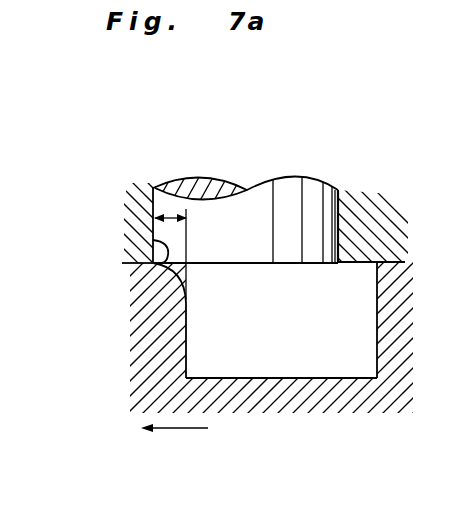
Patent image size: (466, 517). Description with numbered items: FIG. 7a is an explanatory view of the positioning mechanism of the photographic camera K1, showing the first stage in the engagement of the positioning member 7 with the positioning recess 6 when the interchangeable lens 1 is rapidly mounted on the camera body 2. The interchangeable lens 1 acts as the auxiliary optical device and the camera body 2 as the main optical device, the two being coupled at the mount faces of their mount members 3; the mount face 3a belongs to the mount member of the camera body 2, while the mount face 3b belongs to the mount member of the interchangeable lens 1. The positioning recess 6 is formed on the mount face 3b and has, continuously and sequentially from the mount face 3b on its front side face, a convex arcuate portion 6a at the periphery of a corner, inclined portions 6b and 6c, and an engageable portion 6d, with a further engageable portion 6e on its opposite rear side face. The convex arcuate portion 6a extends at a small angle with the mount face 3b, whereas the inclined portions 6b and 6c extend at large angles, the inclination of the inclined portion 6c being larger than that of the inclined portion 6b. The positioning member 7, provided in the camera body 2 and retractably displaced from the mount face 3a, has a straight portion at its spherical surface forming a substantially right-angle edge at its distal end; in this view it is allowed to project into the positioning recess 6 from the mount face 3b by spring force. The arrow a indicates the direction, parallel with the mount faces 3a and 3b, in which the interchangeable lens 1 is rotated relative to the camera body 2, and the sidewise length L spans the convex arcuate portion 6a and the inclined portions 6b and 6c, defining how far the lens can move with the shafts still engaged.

The interchangeable lens 1 is at (128, 346).
The camera body 2 is at (128, 188).
The right member 3 is at (358, 261).
The mount face of the camera body mount member 3a is at (398, 262).
The mount face of the interchangeable lens mount member 3b is at (123, 263).
The positioning recess 6 is at (274, 379).
The convex arcuate portion 6a is at (152, 242).
The inclined portion 6b is at (172, 270).
The inclined portion 6c is at (182, 292).
The engageable portion 6d is at (186, 344).
The engageable portion 6e is at (377, 340).
The positioning member 7 is at (343, 186).
The photographic camera K1 is at (324, 152).
The sidewise length L is at (173, 215).
The arrow a is at (180, 428).